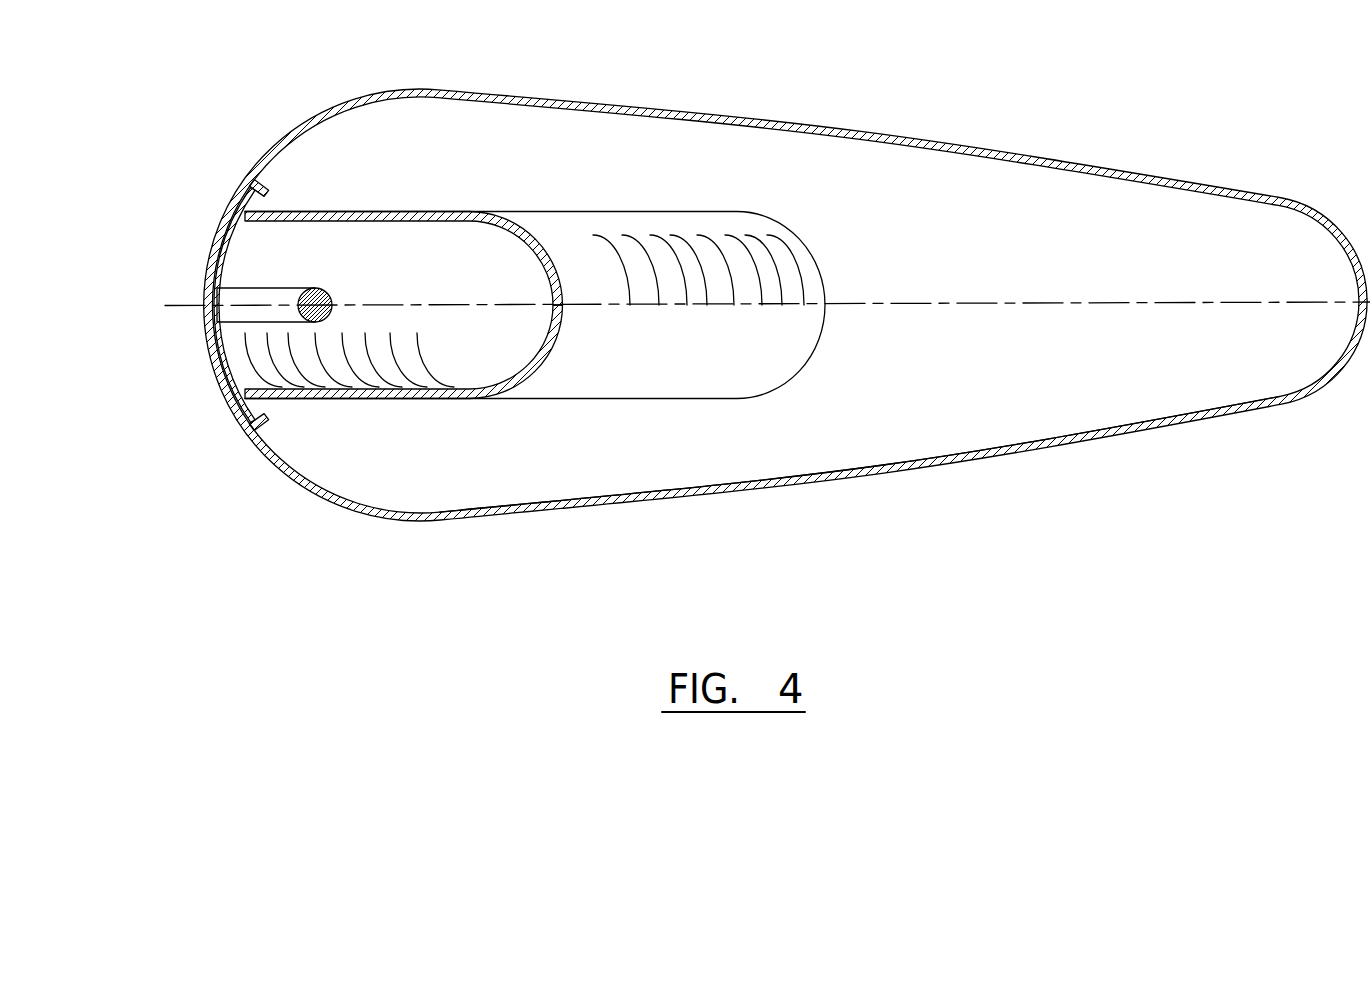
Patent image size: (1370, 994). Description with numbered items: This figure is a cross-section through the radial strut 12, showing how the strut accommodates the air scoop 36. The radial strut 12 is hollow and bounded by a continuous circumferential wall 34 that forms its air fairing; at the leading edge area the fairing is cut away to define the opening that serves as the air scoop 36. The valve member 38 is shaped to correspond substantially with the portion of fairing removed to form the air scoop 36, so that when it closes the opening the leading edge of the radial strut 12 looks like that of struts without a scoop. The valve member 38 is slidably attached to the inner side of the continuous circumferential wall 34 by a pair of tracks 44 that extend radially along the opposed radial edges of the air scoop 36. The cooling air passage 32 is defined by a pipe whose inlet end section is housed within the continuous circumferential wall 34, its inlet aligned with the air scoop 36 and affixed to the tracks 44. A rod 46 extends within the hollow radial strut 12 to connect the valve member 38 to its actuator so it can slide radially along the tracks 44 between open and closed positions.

The radial strut 12 is at (548, 504).
The cooling air passage 32 is at (698, 400).
The continuous circumferential wall 34 is at (1058, 447).
The air scoop 36 is at (227, 402).
The valve member 38 is at (227, 222).
The tracks 44 is at (262, 436).
The rod 46 is at (318, 289).